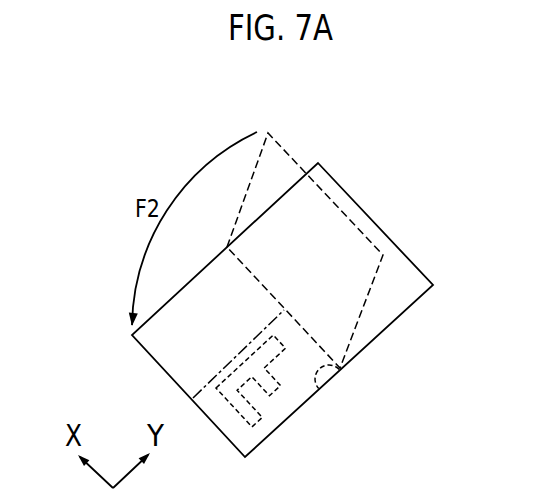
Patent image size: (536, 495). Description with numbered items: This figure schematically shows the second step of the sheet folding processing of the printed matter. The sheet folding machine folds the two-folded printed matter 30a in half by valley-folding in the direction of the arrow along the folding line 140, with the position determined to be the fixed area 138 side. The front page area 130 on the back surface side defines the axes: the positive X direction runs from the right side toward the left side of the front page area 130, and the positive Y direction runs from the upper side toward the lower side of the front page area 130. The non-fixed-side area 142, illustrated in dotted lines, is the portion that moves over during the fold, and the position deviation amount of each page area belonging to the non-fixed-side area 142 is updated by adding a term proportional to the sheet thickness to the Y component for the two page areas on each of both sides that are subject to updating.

The two-folded printed matter 30a is at (143, 157).
The front page area 130 is at (268, 428).
The fixed area 138 is at (188, 368).
The folding line 140 is at (328, 389).
The non-fixed-side area 142 is at (281, 146).